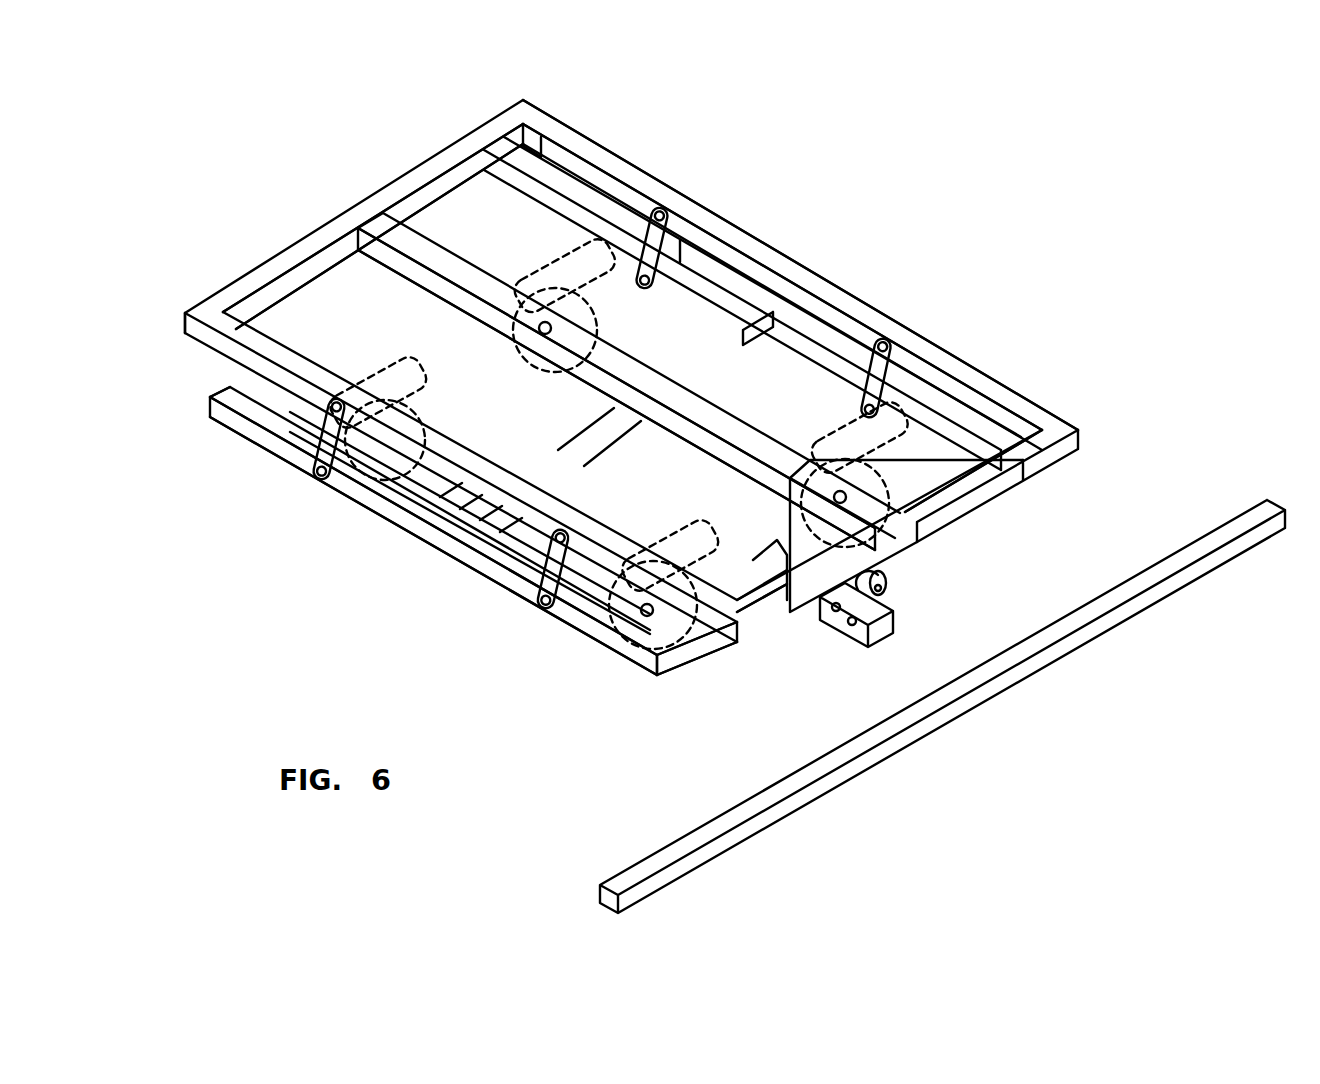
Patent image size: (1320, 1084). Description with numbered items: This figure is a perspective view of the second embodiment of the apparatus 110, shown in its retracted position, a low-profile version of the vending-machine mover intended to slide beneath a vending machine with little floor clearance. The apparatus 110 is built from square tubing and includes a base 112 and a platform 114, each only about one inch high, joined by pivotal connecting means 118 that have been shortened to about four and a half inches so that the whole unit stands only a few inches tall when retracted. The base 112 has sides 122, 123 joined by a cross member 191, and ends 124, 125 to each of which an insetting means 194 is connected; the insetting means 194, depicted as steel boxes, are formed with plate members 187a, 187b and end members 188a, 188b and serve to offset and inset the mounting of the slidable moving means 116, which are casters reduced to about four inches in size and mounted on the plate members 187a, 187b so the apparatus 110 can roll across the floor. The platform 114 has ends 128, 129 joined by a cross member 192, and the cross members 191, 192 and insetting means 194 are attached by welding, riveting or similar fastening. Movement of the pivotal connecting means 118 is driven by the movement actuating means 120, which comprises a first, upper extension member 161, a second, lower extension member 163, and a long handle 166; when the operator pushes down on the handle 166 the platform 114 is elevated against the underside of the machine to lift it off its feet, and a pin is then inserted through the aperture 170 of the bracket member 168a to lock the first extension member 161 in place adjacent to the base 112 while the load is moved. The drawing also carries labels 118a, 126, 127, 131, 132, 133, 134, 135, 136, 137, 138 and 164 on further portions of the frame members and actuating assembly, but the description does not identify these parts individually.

The apparatus 110 is at (1017, 197).
The base 112 is at (242, 430).
The platform 114 is at (232, 290).
The slidable moving means 116 is at (545, 340).
The pivotal connecting means 118 is at (700, 207).
The link pivot 118a is at (225, 425).
The movement actuating means 120 is at (830, 620).
The side of base 122 is at (915, 413).
The side of base 123 is at (565, 613).
The end of base 124 is at (693, 647).
The end of base 125 is at (362, 310).
The side frame member 126 is at (600, 149).
The inner face 127 is at (242, 335).
The end of platform 128 is at (1053, 452).
The end of platform 129 is at (402, 176).
The longitudinal member 131 is at (483, 542).
The lower rail edge 132 is at (577, 633).
The lower rail 133 is at (617, 637).
The longitudinal cross member 134 is at (393, 317).
The frame corner 135 is at (552, 125).
The corner block 136 is at (505, 147).
The end face 137 is at (185, 322).
The top face 138 is at (282, 285).
The first extension member 161 is at (872, 575).
The second extension member 163 is at (860, 635).
The mounting block 164 is at (877, 630).
The handle 166 is at (865, 762).
The bracket member 168a is at (882, 582).
The aperture 170 is at (853, 612).
The plate member 187a is at (440, 422).
The plate member 187b is at (663, 323).
The end member 188a is at (731, 585).
The end member 188b is at (1000, 440).
The cross member 191 is at (613, 443).
The cross member 192 is at (738, 425).
The insetting means 194 is at (473, 433).